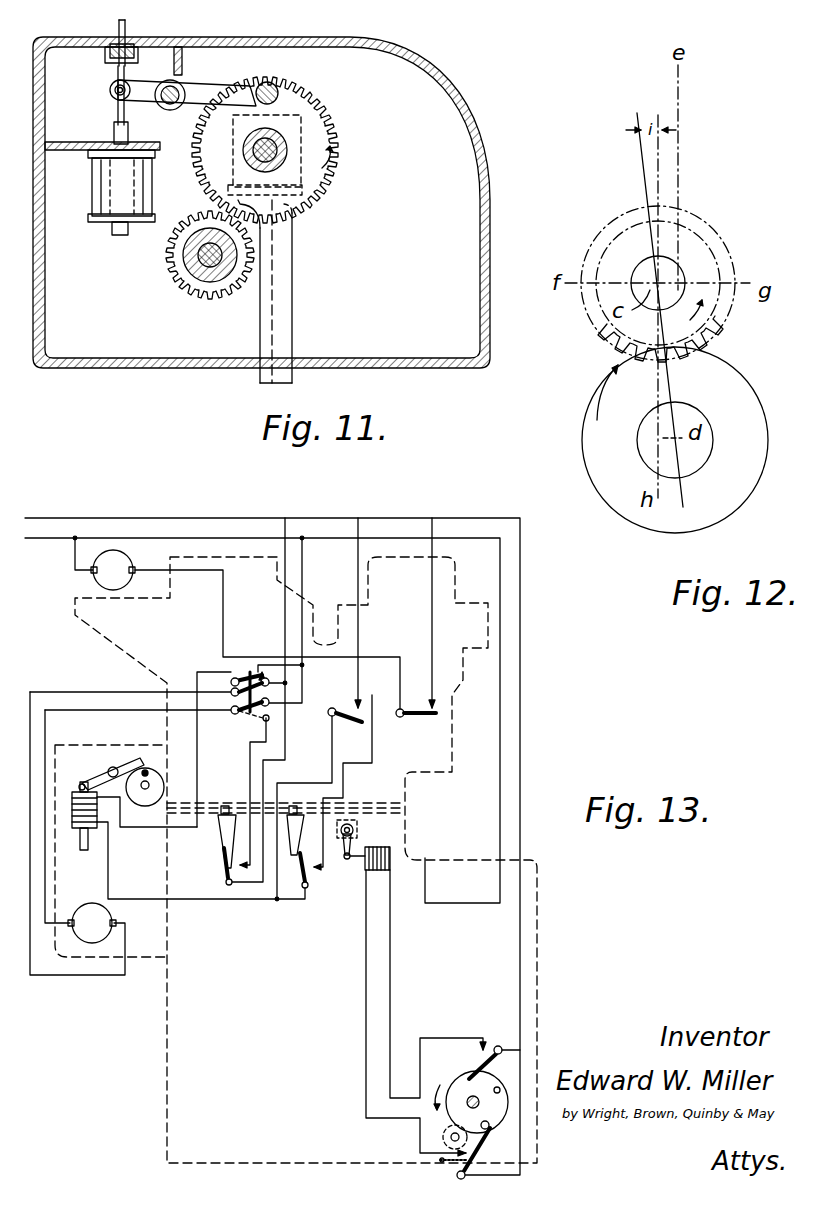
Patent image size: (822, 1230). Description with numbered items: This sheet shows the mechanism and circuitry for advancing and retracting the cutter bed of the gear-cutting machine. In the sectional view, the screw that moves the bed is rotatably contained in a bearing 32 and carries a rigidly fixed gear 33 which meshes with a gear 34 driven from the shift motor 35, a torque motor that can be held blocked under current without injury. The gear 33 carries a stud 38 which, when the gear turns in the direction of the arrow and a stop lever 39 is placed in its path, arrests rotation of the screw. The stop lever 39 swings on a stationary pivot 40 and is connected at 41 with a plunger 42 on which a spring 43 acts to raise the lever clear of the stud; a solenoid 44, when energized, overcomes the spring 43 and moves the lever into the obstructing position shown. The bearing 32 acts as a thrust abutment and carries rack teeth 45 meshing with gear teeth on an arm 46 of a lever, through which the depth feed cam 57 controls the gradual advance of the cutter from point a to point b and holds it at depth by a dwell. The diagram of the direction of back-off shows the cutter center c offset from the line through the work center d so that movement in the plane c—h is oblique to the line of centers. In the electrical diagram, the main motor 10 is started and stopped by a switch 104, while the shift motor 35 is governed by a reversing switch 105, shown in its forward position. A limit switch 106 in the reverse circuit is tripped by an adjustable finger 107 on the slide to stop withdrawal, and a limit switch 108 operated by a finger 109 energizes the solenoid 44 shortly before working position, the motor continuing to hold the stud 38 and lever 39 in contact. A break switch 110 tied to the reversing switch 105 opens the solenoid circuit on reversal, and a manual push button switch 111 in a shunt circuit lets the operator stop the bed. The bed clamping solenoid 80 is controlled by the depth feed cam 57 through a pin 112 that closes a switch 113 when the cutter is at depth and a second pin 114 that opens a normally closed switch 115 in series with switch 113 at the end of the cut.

In FIG. 13, the main motor 10 is at (96, 580).
In FIG. 11, the bearing 32 is at (323, 128).
In FIG. 11, the gear 33 is at (318, 200).
In FIG. 11, the gear 34 is at (172, 280).
In FIG. 13, the shift motor 35 is at (108, 918).
In FIG. 11, the stud 38 is at (276, 90).
In FIG. 13, the stud 38 is at (150, 778).
In FIG. 11, the stop lever 39 is at (248, 95).
In FIG. 13, the stop lever 39 is at (130, 762).
In FIG. 11, the stationary pivot 40 is at (170, 105).
In FIG. 11, the connection 41 is at (112, 90).
In FIG. 11, the plunger 42 is at (115, 114).
In FIG. 11, the spring 43 is at (118, 45).
In FIG. 11, the solenoid 44 is at (110, 204).
In FIG. 13, the solenoid 44 is at (85, 848).
In FIG. 11, the rack teeth 45 is at (300, 196).
In FIG. 11, the lever arm 46 is at (292, 302).
In FIG. 13, the depth feed cam 57 is at (445, 1112).
In FIG. 13, the bed clamping solenoid 80 is at (368, 862).
In FIG. 13, the switch 104 is at (415, 718).
In FIG. 13, the reversing switch 105 is at (233, 705).
In FIG. 13, the limit switch 106 is at (224, 868).
In FIG. 13, the trip device 107 is at (218, 830).
In FIG. 13, the limit switch 108 is at (300, 888).
In FIG. 13, the trip device 109 is at (298, 805).
In FIG. 13, the break switch 110 is at (252, 668).
In FIG. 13, the manual push button switch 111 is at (346, 718).
In FIG. 13, the pin 112 is at (500, 1086).
In FIG. 13, the switch 113 is at (480, 1062).
In FIG. 13, the second pin 114 is at (484, 1132).
In FIG. 13, the switch 115 is at (456, 1166).